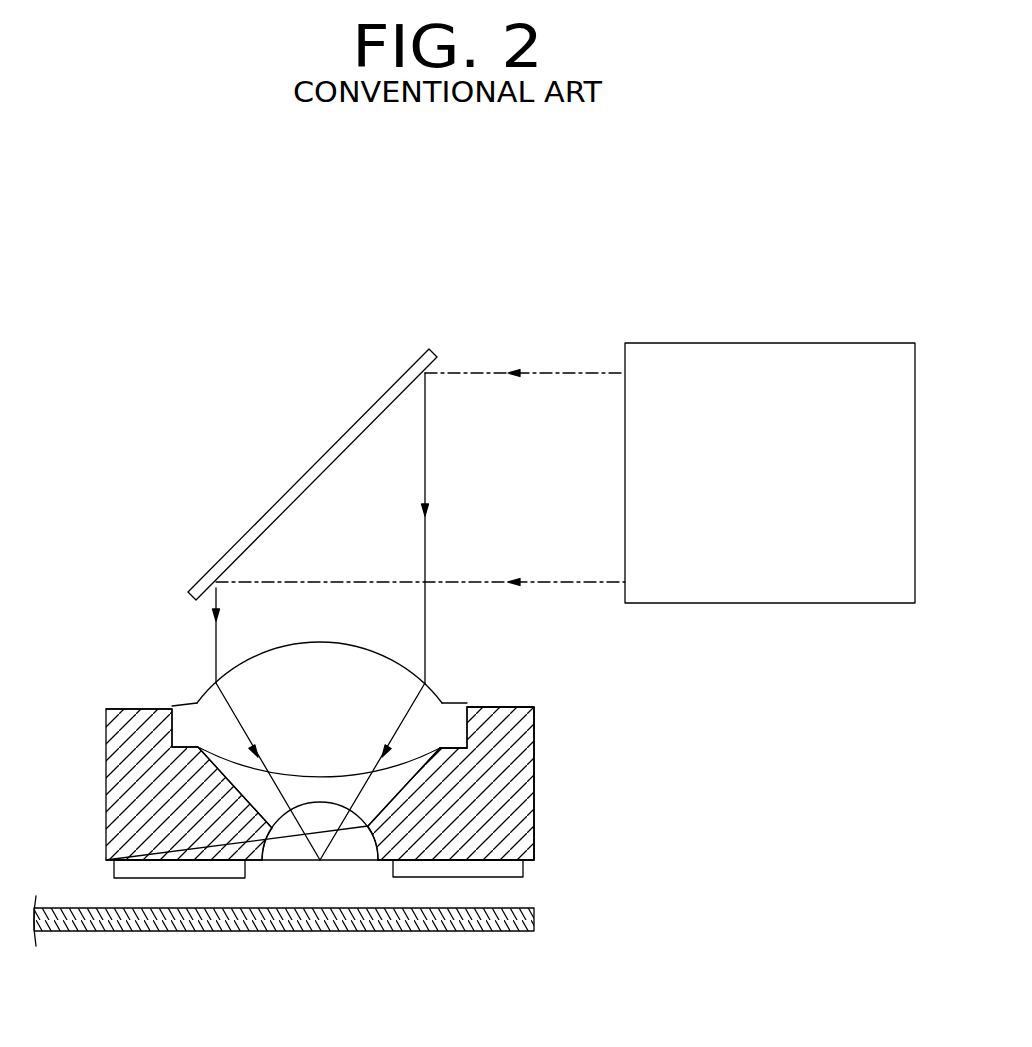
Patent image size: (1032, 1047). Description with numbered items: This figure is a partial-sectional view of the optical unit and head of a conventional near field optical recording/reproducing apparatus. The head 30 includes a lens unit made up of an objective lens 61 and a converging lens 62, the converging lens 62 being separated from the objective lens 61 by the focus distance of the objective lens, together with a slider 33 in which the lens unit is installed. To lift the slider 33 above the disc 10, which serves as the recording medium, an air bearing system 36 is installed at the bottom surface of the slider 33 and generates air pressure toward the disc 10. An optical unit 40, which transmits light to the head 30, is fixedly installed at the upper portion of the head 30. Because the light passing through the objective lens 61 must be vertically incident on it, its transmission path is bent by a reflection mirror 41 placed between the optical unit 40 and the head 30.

The disc 10 is at (497, 917).
The head 30 is at (131, 694).
The slider 33 is at (500, 710).
The air bearing system 36 is at (512, 867).
The optical unit 40 is at (810, 605).
The reflection mirror 41 is at (305, 474).
The objective lens 61 is at (377, 677).
The converging lens 62 is at (358, 850).